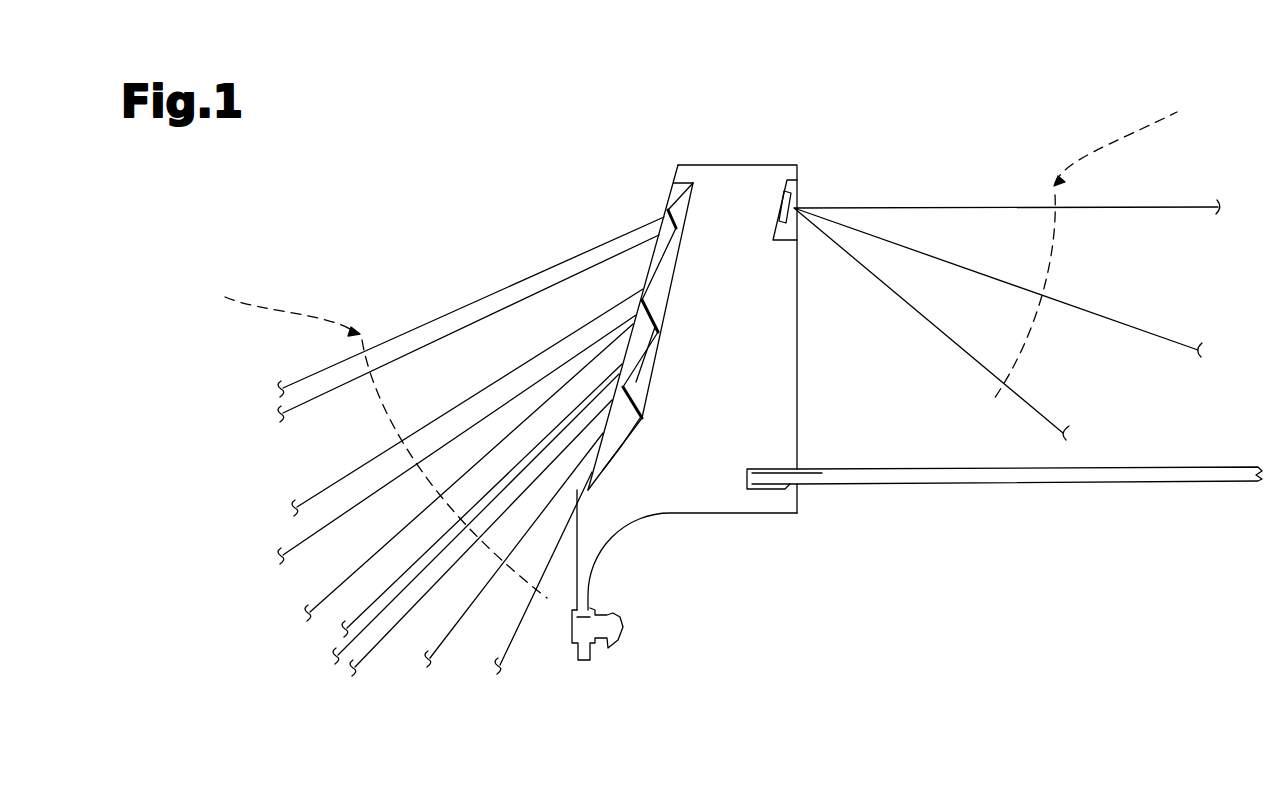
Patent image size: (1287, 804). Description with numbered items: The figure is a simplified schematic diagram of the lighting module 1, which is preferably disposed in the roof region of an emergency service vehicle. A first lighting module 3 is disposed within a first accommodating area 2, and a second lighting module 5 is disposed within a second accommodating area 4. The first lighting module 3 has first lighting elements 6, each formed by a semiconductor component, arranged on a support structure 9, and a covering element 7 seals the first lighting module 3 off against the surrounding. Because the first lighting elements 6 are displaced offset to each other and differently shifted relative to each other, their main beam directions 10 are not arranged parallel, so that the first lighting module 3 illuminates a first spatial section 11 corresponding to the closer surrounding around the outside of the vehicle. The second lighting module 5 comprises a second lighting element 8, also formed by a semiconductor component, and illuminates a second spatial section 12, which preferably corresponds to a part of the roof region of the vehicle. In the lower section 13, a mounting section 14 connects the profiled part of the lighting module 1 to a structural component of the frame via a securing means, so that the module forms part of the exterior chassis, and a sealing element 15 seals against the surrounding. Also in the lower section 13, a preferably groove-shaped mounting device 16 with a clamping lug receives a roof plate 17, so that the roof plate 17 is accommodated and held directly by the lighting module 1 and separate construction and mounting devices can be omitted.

The lighting module 1 is at (755, 177).
The first accommodating area 2 is at (704, 195).
The first lighting module 3 is at (672, 184).
The second accommodating area 4 is at (782, 253).
The second lighting module 5 is at (797, 192).
The first lighting element 6 is at (677, 223).
The covering element 7 is at (635, 270).
The second lighting element 8 is at (797, 199).
The support structure 9 is at (664, 287).
The main beam direction 10 is at (428, 336).
The first spatial section 11 is at (370, 439).
The second spatial section 12 is at (1094, 242).
The lower section 13 is at (806, 545).
The mounting section 14 is at (548, 666).
The sealing element 15 is at (620, 641).
The mounting device 16 is at (817, 455).
The roof plate 17 is at (1031, 474).